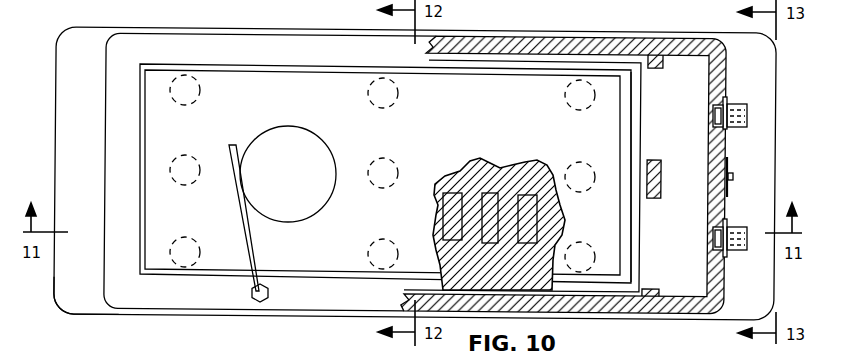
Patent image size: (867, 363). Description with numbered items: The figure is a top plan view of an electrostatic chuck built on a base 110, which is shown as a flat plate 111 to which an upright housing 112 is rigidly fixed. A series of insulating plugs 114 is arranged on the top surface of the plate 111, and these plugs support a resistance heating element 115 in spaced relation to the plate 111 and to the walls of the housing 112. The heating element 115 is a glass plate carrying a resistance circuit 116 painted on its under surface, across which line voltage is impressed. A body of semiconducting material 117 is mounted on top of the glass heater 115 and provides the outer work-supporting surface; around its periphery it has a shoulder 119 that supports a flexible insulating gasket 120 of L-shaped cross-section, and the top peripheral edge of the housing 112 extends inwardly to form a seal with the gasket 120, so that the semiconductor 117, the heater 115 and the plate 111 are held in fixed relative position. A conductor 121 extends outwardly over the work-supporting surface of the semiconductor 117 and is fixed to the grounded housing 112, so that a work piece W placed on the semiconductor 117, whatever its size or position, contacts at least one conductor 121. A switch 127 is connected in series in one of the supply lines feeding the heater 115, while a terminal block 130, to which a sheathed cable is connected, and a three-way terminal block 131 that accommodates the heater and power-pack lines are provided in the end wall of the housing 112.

The base 110 is at (94, 329).
The flat plate 111 is at (80, 151).
The upright housing 112 is at (128, 151).
The insulating plugs 114 is at (392, 105).
The resistance heating element 115 is at (524, 161).
The resistance circuit 116 is at (449, 177).
The body of semiconducting material 117 is at (475, 119).
The peripheral shoulder 119 is at (626, 223).
The flexible insulating gasket 120 is at (140, 222).
The conductor 121 is at (246, 232).
The switch 127 is at (733, 183).
The terminal block 130 is at (756, 85).
The three-way terminal block 131 is at (748, 240).
The work piece W is at (279, 130).